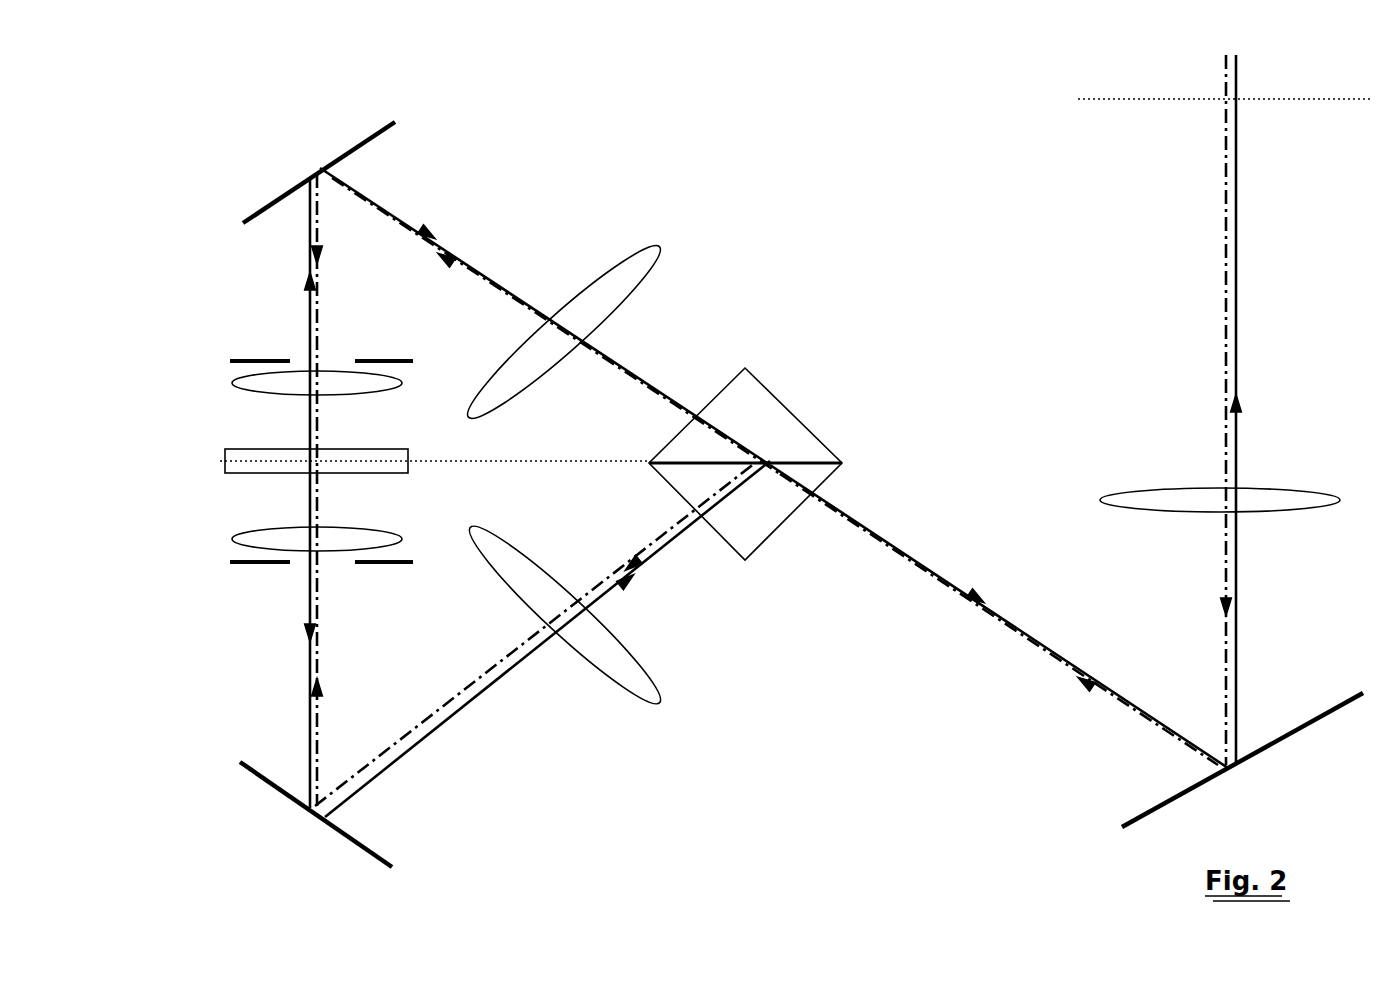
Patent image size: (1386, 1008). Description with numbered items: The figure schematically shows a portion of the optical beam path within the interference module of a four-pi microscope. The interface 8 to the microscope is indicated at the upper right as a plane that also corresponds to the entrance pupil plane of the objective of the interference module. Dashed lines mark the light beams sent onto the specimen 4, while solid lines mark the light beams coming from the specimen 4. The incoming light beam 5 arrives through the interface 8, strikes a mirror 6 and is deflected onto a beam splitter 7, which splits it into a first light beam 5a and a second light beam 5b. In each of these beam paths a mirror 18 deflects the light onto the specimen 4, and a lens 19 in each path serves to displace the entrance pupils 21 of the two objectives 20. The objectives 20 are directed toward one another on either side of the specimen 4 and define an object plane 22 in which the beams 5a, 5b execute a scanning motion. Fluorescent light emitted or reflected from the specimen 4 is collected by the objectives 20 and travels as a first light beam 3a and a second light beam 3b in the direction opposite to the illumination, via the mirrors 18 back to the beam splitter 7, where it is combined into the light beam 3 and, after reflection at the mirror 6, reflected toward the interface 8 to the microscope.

The light beam coming from specimen 3 is at (1238, 428).
The first light beam proceeding from specimen 3a is at (308, 718).
The second light beam proceeding from specimen 3b is at (307, 296).
The specimen 4 is at (385, 450).
The light beam sent onto specimen 5 is at (928, 573).
The first light beam sent onto specimen 5a is at (318, 651).
The second light beam sent onto specimen 5b is at (318, 346).
The mirror 6 is at (1318, 716).
The beam splitter 7 is at (817, 432).
The interface to the microscope 8 is at (1178, 100).
The mirror 18 is at (382, 124).
The lens 19 is at (638, 270).
The objective 20 is at (265, 383).
The entrance pupil 21 is at (385, 360).
The object plane 22 is at (530, 464).